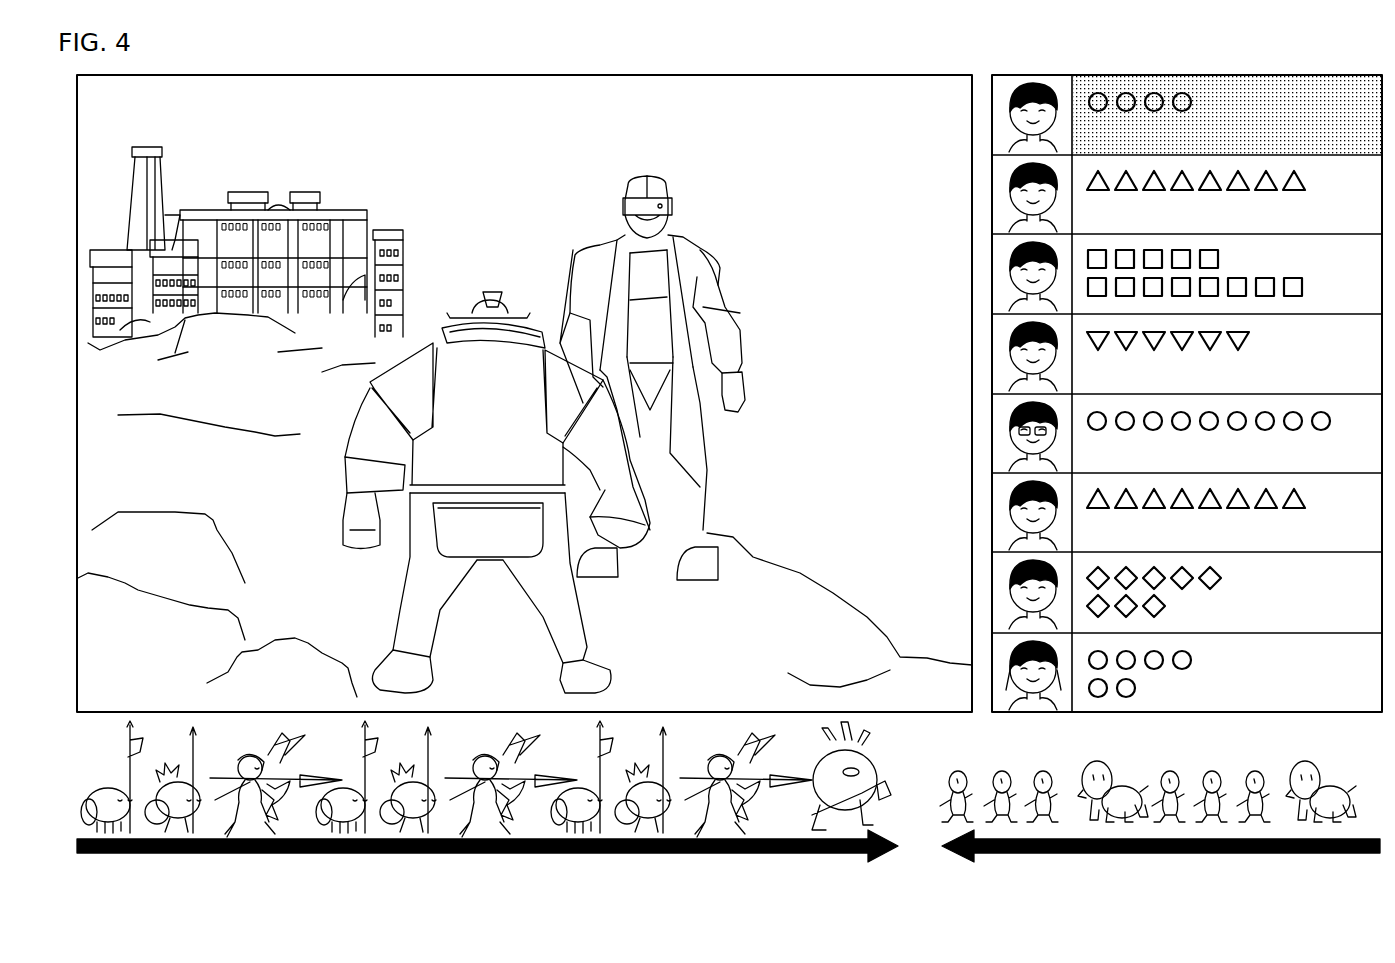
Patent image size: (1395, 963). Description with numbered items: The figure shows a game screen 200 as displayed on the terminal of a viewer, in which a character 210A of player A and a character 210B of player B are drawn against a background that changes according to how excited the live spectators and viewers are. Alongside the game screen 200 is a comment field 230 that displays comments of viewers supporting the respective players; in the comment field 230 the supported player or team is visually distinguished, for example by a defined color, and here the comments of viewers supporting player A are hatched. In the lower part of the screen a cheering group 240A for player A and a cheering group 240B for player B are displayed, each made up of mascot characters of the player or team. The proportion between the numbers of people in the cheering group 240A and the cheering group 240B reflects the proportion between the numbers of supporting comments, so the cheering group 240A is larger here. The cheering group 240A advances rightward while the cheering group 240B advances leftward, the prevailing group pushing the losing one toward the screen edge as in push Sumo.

The game screen 200 is at (880, 74).
The comment field 230 is at (1283, 74).
The character of player A 210A is at (690, 240).
The character of player B 210B is at (487, 290).
The cheering group for player A 240A is at (490, 855).
The cheering group for player B 240B is at (1160, 855).